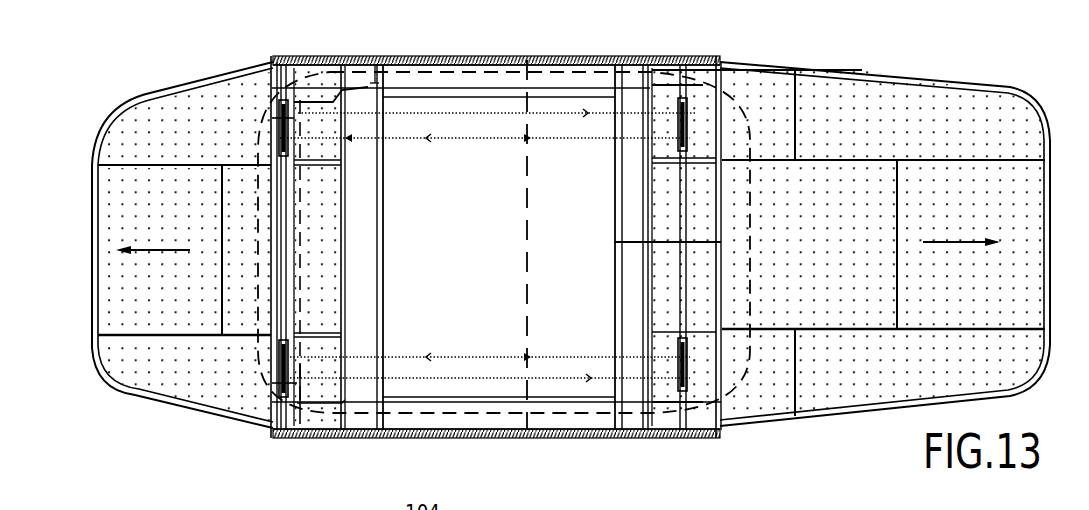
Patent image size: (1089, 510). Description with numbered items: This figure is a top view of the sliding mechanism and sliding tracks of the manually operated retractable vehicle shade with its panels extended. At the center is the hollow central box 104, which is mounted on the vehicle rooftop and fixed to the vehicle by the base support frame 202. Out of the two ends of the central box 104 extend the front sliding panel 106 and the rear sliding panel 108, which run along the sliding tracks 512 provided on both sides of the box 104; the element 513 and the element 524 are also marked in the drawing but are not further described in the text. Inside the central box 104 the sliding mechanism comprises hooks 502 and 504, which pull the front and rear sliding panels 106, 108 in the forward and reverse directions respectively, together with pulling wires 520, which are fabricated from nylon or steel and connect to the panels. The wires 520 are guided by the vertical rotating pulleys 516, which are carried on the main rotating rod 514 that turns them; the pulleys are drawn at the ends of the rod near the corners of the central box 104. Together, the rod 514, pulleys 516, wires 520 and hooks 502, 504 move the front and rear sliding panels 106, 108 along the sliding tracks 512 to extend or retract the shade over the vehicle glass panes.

The hollow central box 104 is at (503, 232).
The front sliding panel 106 is at (851, 237).
The rear sliding panel 108 is at (152, 97).
The base support frame 202 is at (617, 273).
The hook 502 is at (644, 380).
The hook 504 is at (350, 141).
The sliding tracks 512 is at (365, 441).
The rail portion 513 is at (496, 287).
The main rotating rod 514 is at (272, 244).
The vertical rotating pulleys 516 is at (271, 402).
The pulling wires 520 is at (490, 345).
The panel side wall 524 is at (384, 343).